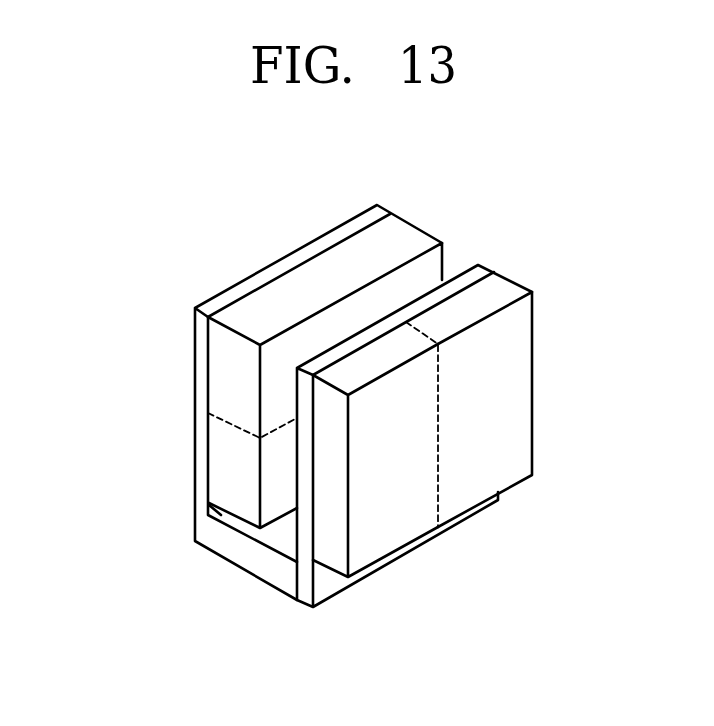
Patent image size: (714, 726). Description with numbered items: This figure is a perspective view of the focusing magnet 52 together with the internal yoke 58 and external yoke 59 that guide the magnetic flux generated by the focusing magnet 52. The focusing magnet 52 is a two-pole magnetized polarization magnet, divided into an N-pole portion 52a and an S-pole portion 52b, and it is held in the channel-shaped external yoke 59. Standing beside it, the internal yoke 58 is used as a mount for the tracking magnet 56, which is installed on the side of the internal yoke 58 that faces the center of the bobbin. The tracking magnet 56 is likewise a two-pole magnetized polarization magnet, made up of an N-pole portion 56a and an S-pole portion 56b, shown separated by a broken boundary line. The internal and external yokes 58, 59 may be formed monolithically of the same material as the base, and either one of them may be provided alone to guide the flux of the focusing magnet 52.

The focusing magnet 52 is at (266, 336).
The N-pole portion 52a is at (220, 378).
The S-pole portion 52b is at (220, 468).
The tracking magnet 56 is at (442, 402).
The N-pole portion 56a is at (418, 522).
The S-pole portion 56b is at (475, 492).
The internal yoke 58 is at (477, 270).
The external yoke 59 is at (287, 260).